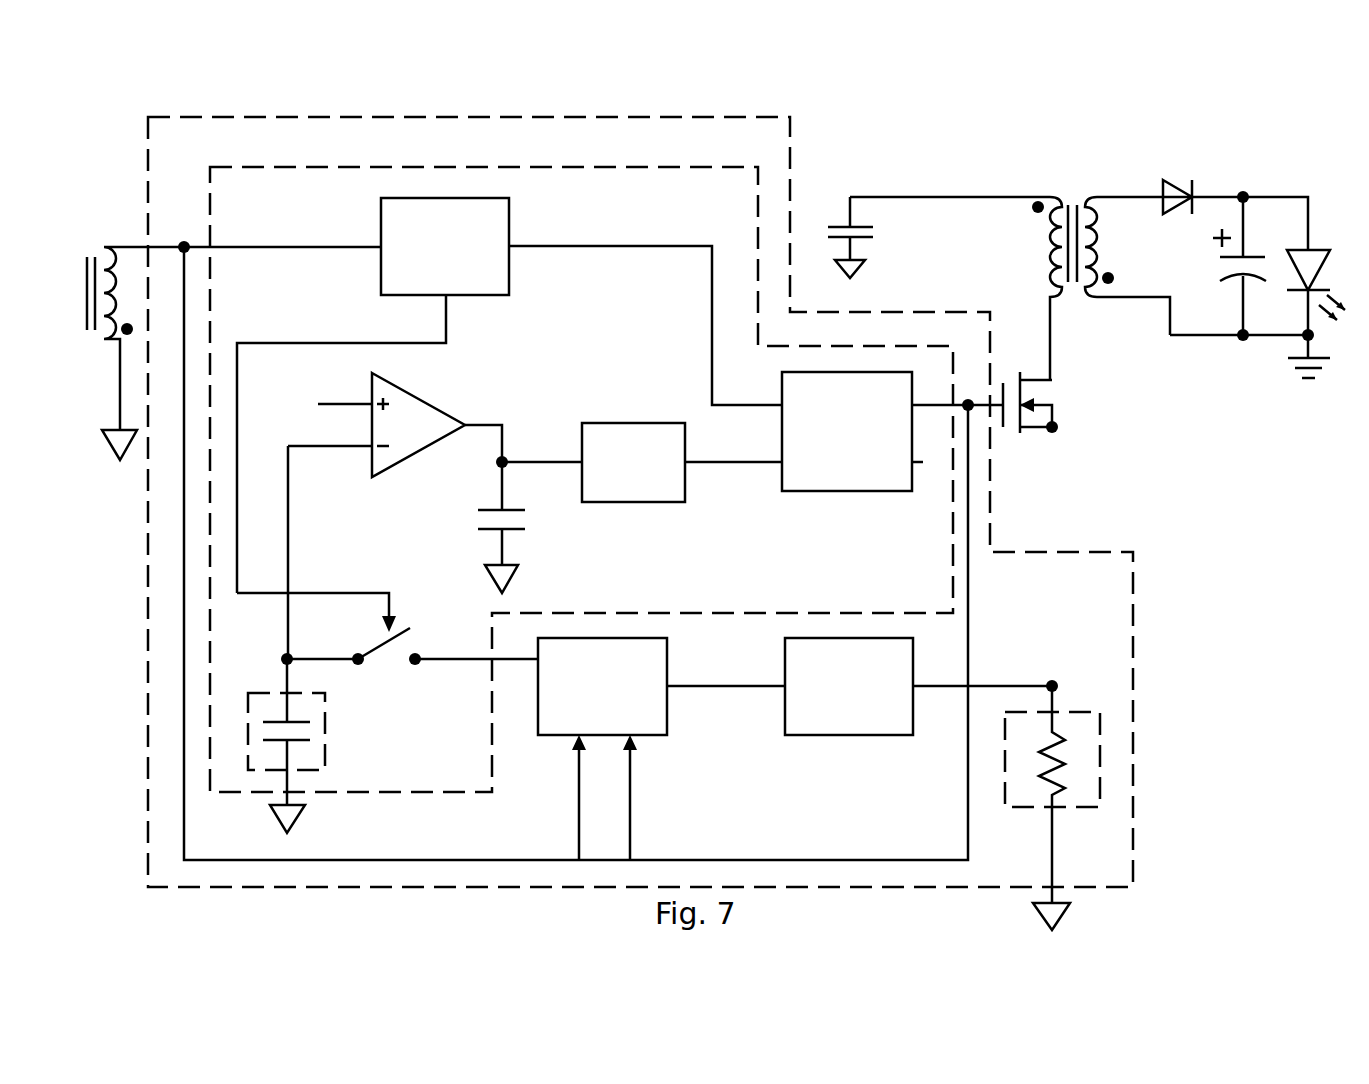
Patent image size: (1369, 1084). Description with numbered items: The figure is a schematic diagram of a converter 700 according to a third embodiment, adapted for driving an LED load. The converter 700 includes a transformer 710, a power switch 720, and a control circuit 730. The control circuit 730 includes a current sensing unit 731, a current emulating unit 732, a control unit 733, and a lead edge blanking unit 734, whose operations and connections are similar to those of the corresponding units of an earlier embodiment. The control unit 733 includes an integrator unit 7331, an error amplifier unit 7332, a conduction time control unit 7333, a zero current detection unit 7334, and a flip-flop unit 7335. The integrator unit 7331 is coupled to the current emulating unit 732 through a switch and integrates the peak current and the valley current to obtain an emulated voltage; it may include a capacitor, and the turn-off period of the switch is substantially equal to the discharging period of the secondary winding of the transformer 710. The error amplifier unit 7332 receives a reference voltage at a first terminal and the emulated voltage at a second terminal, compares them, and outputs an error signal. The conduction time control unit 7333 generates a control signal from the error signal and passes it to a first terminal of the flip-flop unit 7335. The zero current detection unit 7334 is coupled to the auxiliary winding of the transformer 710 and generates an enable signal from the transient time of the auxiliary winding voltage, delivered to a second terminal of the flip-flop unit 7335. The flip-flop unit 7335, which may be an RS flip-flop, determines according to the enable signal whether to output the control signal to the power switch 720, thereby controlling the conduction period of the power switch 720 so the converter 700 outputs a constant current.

The converter 700 is at (706, 502).
The transformer 710 is at (1075, 200).
The power switch 720 is at (1055, 402).
The control circuit 730 is at (1135, 657).
The current sensing unit 731 is at (1100, 775).
The current emulating unit 732 is at (600, 686).
The control unit 733 is at (953, 563).
The lead edge blanking unit 734 is at (921, 686).
The integrator unit 7331 is at (325, 729).
The error amplifier unit 7332 is at (405, 460).
The conduction time control unit 7333 is at (642, 462).
The zero current detection unit 7334 is at (509, 395).
The flip-flop unit 7335 is at (845, 491).